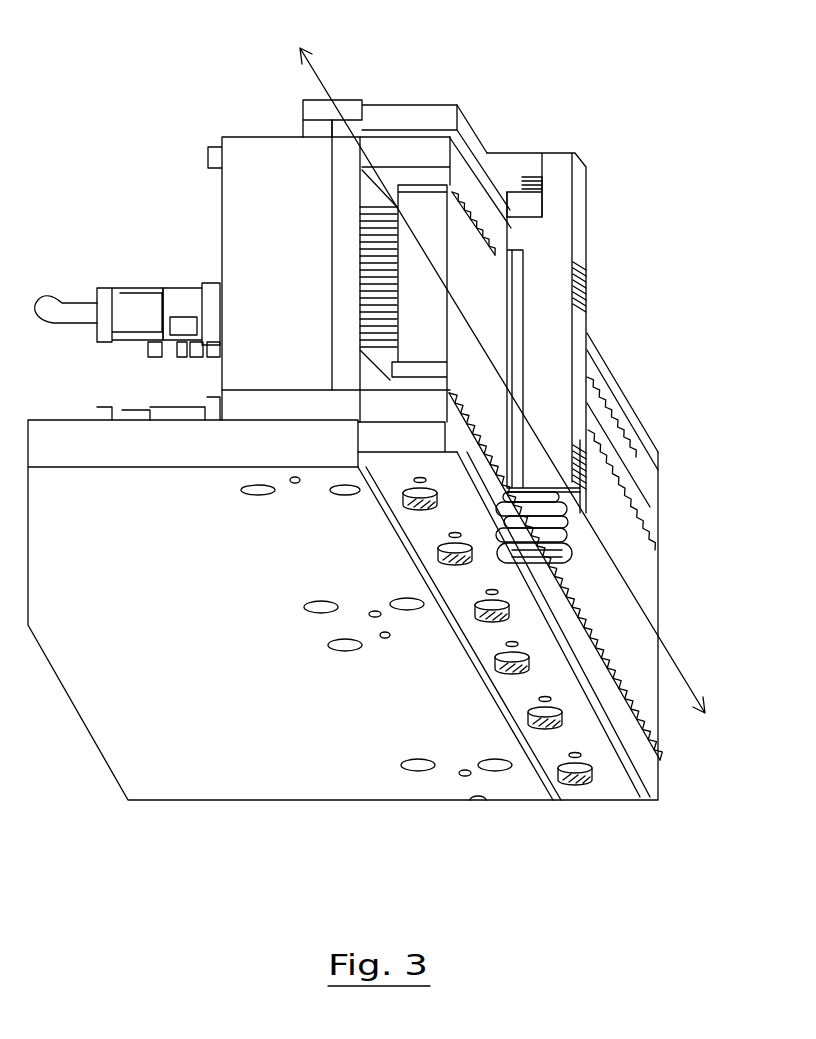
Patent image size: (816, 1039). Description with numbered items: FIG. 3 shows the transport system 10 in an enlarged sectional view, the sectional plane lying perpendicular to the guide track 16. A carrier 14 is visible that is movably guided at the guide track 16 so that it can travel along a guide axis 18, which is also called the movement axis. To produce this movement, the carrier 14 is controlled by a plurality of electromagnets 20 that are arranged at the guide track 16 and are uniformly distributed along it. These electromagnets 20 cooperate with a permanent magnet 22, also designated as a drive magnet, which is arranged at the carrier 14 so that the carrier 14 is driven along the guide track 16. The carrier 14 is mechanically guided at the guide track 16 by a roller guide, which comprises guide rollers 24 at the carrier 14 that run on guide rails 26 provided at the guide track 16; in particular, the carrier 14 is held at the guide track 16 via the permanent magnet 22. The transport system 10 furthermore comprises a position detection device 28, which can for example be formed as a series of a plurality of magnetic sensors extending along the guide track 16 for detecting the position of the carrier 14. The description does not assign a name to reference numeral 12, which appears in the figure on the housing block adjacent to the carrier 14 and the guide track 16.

The transport system 10 is at (692, 114).
The motor housing block 12 is at (292, 280).
The carrier 14 is at (580, 320).
The guide track 16 is at (431, 142).
The guide axis 18 is at (521, 380).
The electromagnets 20 is at (630, 511).
The permanent magnet 22 is at (520, 360).
The guide rollers 24 is at (535, 200).
The guide rails 26 is at (492, 177).
The position detection device 28 is at (318, 108).